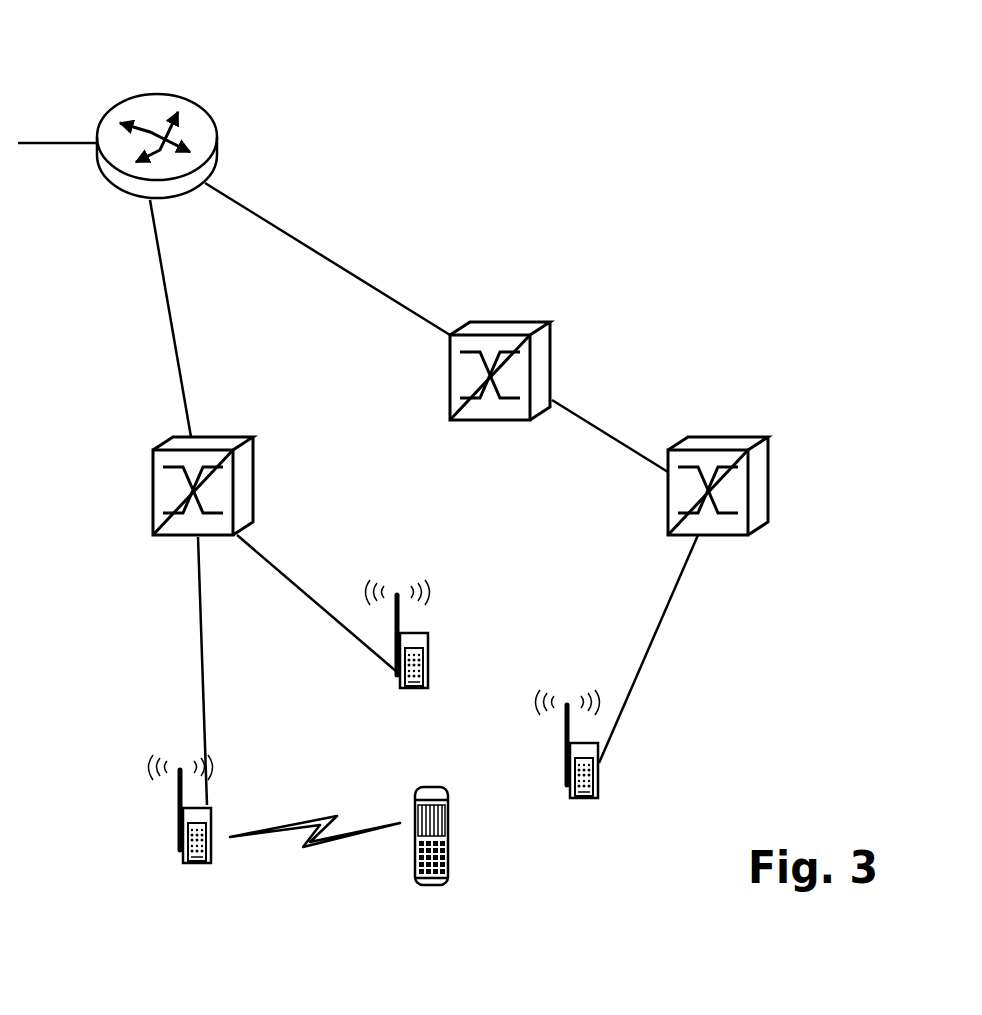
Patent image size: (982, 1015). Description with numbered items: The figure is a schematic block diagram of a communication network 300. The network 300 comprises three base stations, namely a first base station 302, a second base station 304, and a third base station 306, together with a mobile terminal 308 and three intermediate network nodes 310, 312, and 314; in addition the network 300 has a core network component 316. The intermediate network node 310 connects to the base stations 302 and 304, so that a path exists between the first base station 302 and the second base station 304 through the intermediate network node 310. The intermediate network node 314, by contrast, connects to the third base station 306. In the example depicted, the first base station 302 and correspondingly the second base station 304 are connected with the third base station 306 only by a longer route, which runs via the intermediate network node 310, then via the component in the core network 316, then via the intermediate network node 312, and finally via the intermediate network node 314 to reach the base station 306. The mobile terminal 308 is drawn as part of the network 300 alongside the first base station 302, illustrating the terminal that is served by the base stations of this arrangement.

The communication network 300 is at (598, 172).
The base station 1 302 is at (182, 840).
The base station 2 304 is at (428, 657).
The base station 3 306 is at (598, 791).
The mobile terminal 308 is at (448, 855).
The intermediate network node 310 is at (253, 488).
The intermediate network node 312 is at (550, 381).
The intermediate network node 314 is at (768, 486).
The core network component 316 is at (173, 93).